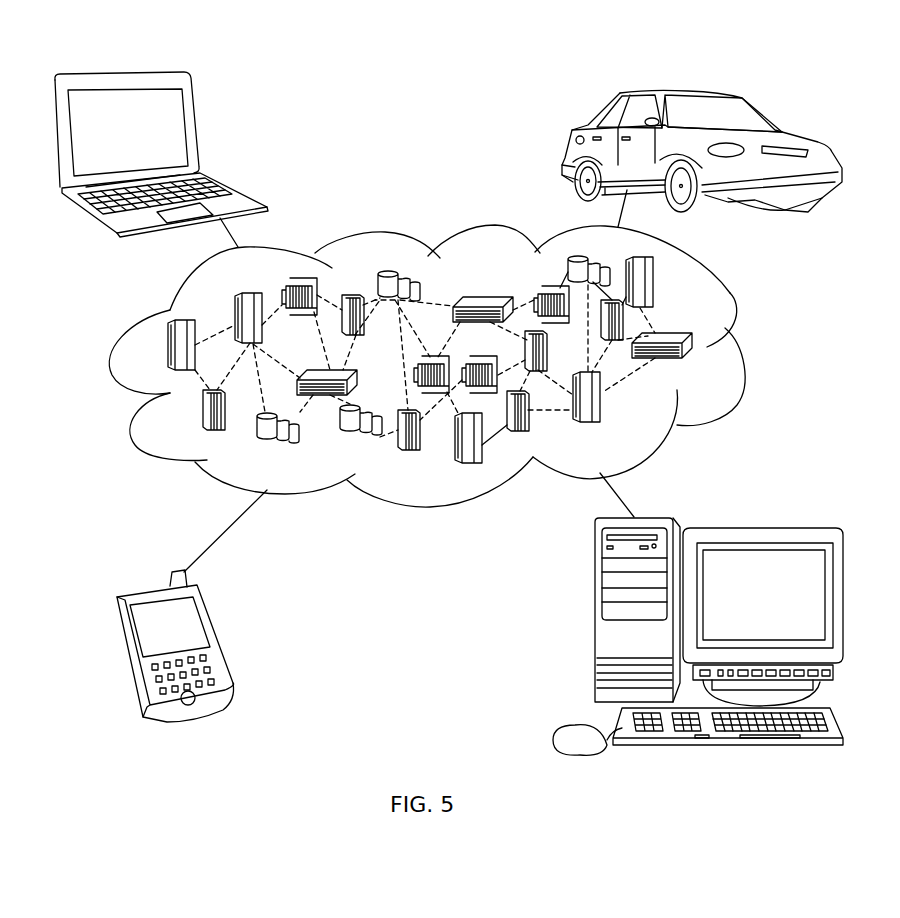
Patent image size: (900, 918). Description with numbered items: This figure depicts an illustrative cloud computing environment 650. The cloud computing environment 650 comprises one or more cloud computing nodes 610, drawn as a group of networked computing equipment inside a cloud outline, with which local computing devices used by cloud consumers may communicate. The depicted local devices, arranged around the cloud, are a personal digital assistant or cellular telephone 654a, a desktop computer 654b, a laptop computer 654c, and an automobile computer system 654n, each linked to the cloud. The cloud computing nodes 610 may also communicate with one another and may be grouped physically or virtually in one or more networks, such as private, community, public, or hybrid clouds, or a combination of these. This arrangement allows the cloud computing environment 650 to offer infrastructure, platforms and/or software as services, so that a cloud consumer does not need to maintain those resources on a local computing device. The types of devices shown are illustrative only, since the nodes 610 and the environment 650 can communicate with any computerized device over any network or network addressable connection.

The cloud computing nodes 610 is at (712, 363).
The cloud computing environment 650 is at (730, 293).
The personal digital assistant or cellular telephone 654a is at (215, 625).
The desktop computer 654b is at (595, 618).
The laptop computer 654c is at (195, 130).
The automobile computer system 654n is at (572, 130).